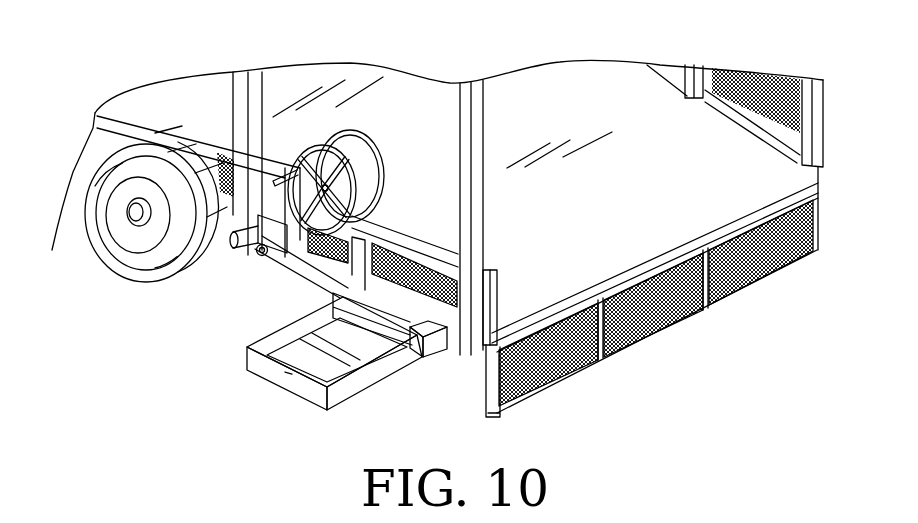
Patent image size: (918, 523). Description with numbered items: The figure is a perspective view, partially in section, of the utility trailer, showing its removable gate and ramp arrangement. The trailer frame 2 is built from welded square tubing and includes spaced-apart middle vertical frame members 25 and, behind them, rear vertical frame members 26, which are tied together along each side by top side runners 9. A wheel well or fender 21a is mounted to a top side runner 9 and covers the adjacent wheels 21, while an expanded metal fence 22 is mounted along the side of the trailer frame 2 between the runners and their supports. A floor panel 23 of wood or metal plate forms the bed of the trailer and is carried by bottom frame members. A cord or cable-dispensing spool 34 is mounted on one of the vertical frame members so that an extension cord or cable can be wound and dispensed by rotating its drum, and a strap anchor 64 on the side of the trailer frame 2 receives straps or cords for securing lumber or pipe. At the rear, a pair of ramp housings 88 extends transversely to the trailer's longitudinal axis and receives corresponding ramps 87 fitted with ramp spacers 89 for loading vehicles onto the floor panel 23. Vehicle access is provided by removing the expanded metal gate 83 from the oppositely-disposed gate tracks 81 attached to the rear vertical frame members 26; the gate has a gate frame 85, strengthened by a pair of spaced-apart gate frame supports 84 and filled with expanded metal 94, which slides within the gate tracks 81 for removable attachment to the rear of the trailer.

The trailer frame 2 is at (496, 95).
The top side runner 9 is at (172, 111).
The wheel 21 is at (146, 266).
The wheel well or fender 21a is at (66, 195).
The expanded metal fence 22 is at (345, 243).
The floor panel 23 is at (572, 189).
The middle vertical frame member 25 is at (258, 92).
The rear vertical frame member 26 is at (482, 147).
The cord or cable-dispensing spool 34 is at (363, 123).
The strap anchor 64 is at (240, 250).
The gate track 81 is at (818, 118).
The expanded metal gate 83 is at (733, 200).
The gate frame support 84 is at (640, 298).
The gate frame 85 is at (486, 396).
The ramp 87 is at (292, 395).
The ramp housing 88 is at (433, 362).
The ramp spacer 89 is at (328, 338).
The expanded metal 94 is at (658, 297).